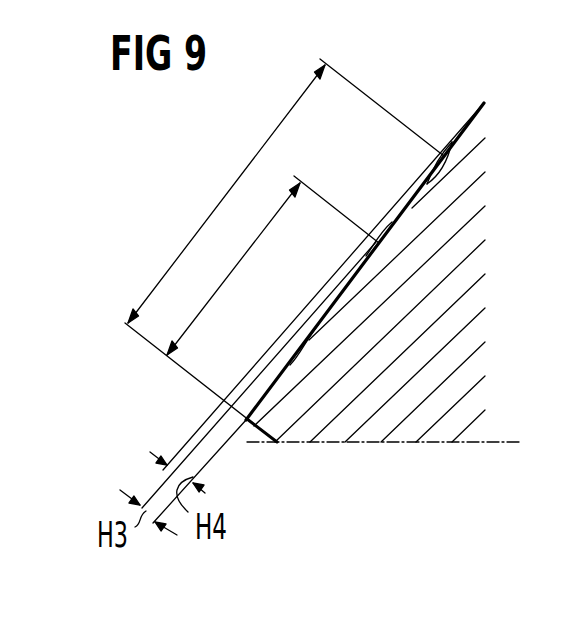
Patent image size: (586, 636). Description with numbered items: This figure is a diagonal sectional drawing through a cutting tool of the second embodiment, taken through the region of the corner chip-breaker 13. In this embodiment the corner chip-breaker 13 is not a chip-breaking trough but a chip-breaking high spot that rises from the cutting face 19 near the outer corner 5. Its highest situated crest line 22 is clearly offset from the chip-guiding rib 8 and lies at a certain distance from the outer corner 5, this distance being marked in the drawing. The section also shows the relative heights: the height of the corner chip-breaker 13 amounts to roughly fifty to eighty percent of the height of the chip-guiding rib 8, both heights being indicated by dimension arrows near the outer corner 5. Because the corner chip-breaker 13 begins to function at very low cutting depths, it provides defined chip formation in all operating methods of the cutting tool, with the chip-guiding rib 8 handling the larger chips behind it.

The outer corner 5 is at (246, 418).
The chip-guiding rib 8 is at (452, 140).
The corner chip-breaker 13 is at (181, 169).
The cutting face 19 is at (302, 346).
The crest line 22 is at (378, 240).